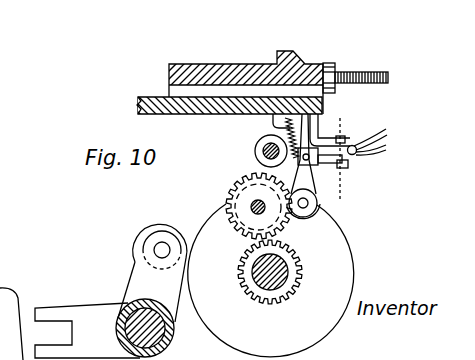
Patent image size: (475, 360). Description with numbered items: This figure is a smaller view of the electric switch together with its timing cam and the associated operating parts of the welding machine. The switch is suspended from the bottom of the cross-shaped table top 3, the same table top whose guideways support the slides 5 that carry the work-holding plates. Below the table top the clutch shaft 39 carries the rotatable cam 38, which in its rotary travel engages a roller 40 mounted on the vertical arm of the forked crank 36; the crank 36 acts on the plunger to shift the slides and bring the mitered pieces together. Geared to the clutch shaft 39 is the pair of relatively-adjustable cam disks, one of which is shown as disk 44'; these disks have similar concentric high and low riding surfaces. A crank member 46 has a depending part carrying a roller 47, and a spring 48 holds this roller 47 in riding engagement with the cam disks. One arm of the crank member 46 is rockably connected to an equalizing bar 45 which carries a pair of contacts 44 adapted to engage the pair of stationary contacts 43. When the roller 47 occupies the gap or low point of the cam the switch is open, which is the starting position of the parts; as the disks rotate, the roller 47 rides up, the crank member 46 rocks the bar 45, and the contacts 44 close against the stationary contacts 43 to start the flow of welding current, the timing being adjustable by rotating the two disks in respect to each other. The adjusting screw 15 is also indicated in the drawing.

The table top 3 is at (227, 115).
The slide 5 is at (312, 70).
The adjusting screw 15 is at (343, 163).
The forked crank 36 is at (88, 306).
The cam 38 is at (352, 262).
The clutch shaft 39 is at (292, 271).
The roller 40 is at (134, 242).
The stationary contacts 43 is at (341, 147).
The contacts 44 is at (359, 167).
The cam disk 44' is at (242, 206).
The equalizing bar 45 is at (348, 170).
The crank member 46 is at (310, 164).
The roller 47 is at (318, 214).
The spring 48 is at (285, 128).